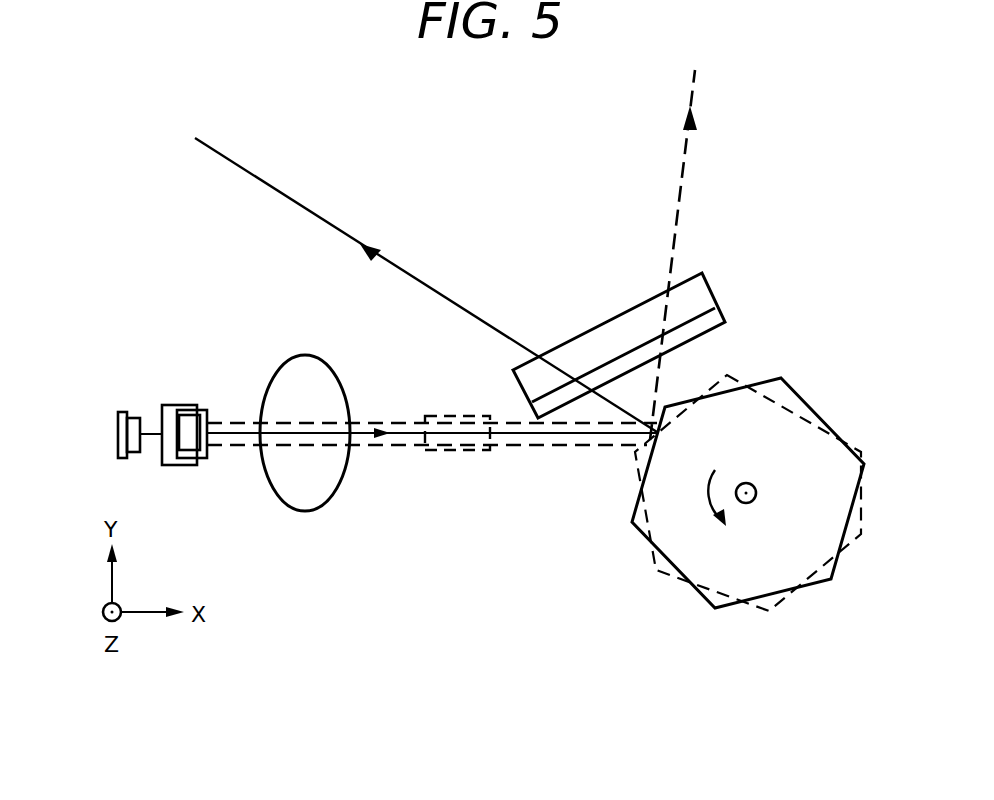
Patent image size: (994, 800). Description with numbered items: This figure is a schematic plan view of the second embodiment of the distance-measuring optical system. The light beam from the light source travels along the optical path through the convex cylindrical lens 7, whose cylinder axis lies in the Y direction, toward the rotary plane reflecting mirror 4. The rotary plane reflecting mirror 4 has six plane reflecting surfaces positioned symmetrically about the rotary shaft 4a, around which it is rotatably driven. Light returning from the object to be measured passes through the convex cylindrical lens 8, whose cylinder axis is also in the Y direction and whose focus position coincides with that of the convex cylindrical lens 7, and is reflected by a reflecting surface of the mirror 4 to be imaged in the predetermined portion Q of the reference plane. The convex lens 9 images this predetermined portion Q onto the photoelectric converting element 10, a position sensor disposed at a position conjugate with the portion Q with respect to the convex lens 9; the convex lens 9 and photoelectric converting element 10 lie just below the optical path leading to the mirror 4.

The rotary plane reflecting mirror 4 is at (800, 422).
The rotary shaft 4a is at (756, 495).
The convex cylindrical lens 7 is at (181, 411).
The convex cylindrical lens 8 is at (713, 289).
The convex lens 9 is at (329, 482).
The photoelectric converting element 10 is at (178, 463).
The predetermined portion of the reference plane Q is at (450, 452).